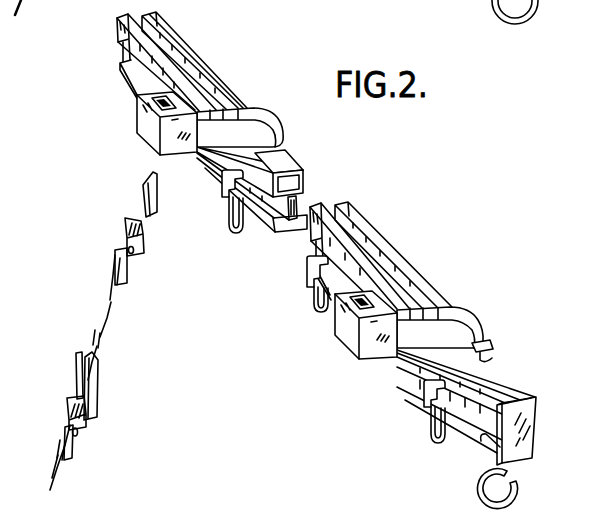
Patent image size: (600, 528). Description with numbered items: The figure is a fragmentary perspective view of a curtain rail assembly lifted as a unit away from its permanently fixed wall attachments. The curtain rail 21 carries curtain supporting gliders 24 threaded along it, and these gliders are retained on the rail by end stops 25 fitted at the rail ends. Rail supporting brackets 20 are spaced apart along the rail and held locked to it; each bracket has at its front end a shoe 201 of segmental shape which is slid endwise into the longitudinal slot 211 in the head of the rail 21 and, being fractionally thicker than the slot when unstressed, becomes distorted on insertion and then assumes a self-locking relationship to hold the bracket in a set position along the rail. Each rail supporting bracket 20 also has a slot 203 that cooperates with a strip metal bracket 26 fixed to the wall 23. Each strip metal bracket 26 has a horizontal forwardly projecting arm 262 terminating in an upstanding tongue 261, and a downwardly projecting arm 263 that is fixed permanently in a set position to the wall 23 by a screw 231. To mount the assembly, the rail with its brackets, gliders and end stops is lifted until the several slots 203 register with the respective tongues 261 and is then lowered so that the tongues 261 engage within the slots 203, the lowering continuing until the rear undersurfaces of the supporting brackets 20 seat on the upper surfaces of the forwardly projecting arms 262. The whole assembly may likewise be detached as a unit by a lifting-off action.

The curtain rail 21 is at (308, 178).
The longitudinal slot 211 is at (163, 29).
The shoe 201 is at (272, 156).
The slot 203 is at (150, 97).
The rail supporting bracket 20 is at (134, 132).
The strip metal bracket 26 is at (133, 119).
The curtain supporting glider 24 is at (226, 196).
The end stop 25 is at (513, 452).
The wall 23 is at (110, 310).
The screw 231 is at (133, 257).
The upstanding tongue 261 is at (100, 380).
The horizontal forwardly projecting arm 262 is at (140, 216).
The downwardly projecting arm 263 is at (116, 247).